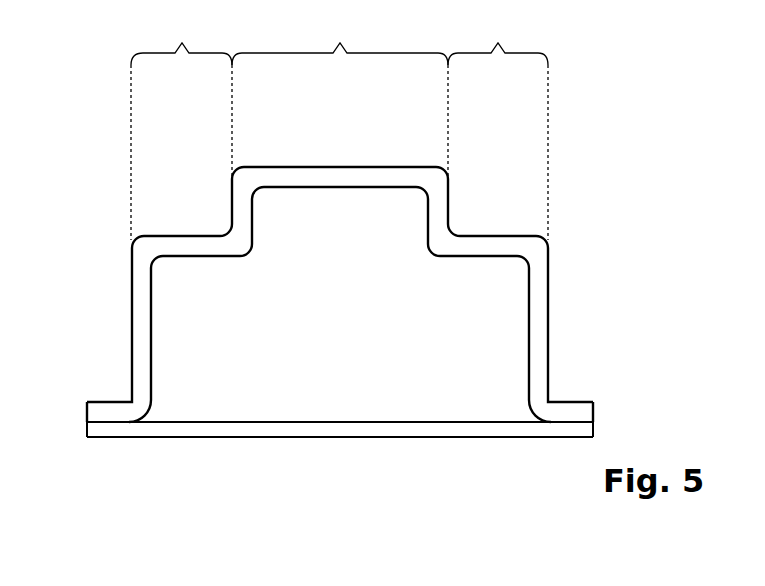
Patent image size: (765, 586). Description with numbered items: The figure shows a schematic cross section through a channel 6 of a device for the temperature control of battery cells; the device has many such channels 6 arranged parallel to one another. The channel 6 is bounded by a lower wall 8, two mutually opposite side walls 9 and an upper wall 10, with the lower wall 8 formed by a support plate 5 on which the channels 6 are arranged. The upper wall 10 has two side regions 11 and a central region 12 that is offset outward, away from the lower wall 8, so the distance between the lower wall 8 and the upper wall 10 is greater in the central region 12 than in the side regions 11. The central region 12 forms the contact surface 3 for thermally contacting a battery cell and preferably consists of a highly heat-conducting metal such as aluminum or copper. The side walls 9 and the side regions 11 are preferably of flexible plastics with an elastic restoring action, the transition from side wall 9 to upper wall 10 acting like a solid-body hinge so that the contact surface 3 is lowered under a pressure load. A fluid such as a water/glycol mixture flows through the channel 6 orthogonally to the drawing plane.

The contact surface 3 is at (343, 165).
The support plate 5 is at (87, 429).
The channel 6 is at (586, 90).
The lower wall 8 is at (338, 452).
The side wall 9 is at (118, 331).
The upper wall 10 is at (189, 220).
The side region 11 is at (339, 129).
The central region 12 is at (340, 100).